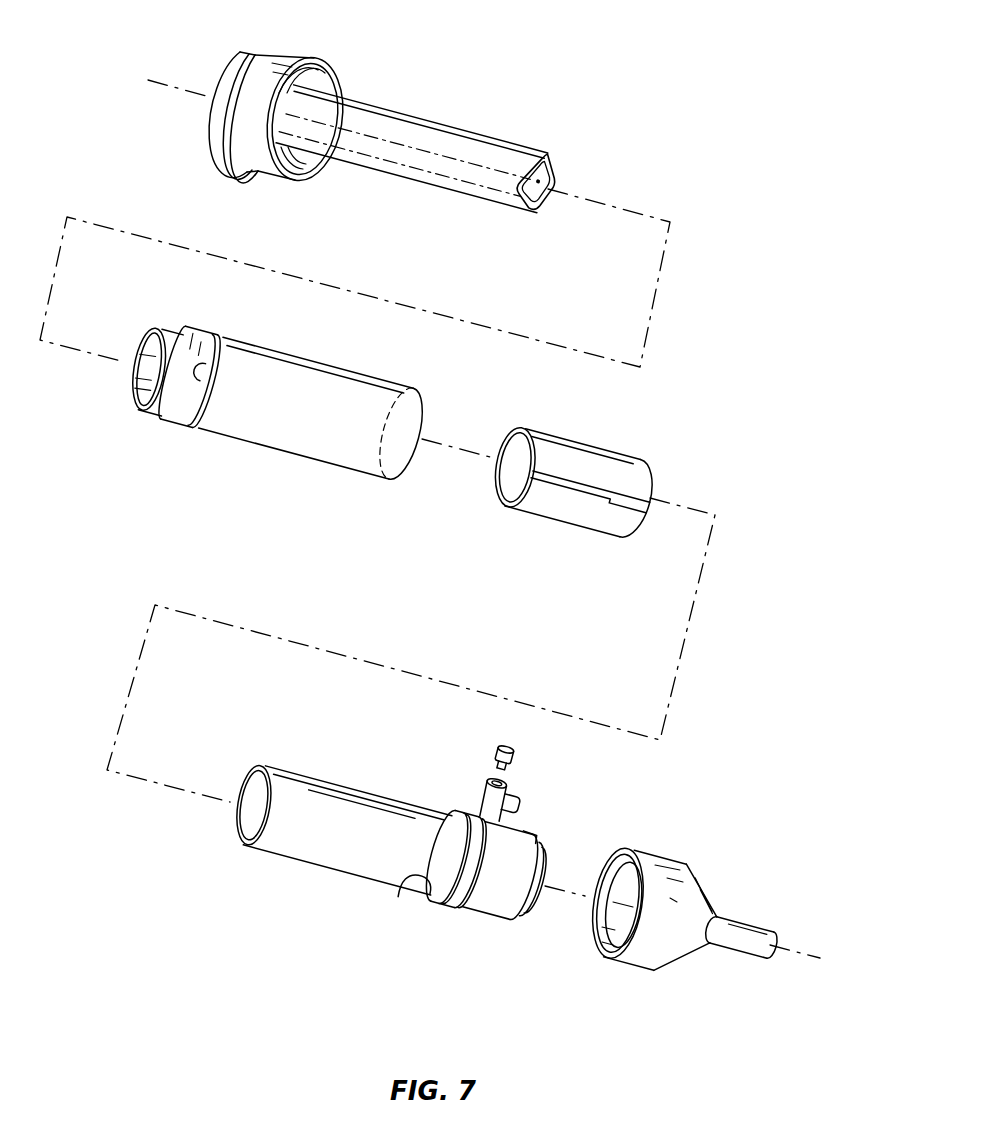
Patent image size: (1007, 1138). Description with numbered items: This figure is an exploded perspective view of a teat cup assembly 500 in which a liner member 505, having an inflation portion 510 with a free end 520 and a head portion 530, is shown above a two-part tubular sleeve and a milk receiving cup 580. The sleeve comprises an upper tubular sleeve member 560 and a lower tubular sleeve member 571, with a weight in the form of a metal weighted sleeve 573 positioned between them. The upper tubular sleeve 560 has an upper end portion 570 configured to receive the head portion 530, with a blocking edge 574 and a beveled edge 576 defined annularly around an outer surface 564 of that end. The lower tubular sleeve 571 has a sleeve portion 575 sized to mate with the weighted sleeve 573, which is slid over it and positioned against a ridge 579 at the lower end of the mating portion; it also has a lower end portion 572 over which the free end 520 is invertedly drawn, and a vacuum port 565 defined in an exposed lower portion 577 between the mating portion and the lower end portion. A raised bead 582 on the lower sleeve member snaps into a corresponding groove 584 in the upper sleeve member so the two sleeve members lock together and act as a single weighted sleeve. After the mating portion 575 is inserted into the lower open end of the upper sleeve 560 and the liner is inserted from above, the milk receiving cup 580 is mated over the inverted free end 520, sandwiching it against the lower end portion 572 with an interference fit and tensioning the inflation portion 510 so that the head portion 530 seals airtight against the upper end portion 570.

The teat cup assembly 500 is at (434, 881).
The liner member 505 is at (369, 124).
The inflation portion 510 is at (426, 162).
The free end 520 is at (549, 151).
The head portion 530 is at (212, 128).
The upper tubular sleeve member 560 is at (349, 596).
The outer surface 564 is at (148, 413).
The vacuum port 565 is at (470, 770).
The upper end portion 570 is at (349, 596).
The lower tubular sleeve member 571 is at (410, 883).
The lower end portion 572 is at (503, 935).
The weighted sleeve 573 is at (553, 547).
The blocking edge 574 is at (210, 378).
The sleeve portion 575 is at (332, 845).
The beveled edge 576 is at (203, 335).
The exposed lower portion 577 is at (537, 838).
The ridge 579 is at (398, 883).
The milk receiving cup 580 is at (654, 992).
The raised bead 582 is at (452, 805).
The groove 584 is at (430, 519).